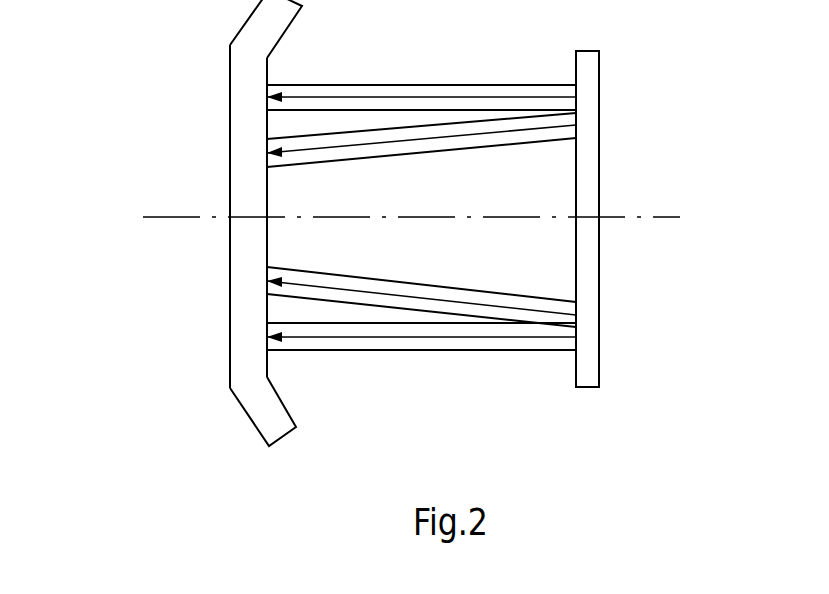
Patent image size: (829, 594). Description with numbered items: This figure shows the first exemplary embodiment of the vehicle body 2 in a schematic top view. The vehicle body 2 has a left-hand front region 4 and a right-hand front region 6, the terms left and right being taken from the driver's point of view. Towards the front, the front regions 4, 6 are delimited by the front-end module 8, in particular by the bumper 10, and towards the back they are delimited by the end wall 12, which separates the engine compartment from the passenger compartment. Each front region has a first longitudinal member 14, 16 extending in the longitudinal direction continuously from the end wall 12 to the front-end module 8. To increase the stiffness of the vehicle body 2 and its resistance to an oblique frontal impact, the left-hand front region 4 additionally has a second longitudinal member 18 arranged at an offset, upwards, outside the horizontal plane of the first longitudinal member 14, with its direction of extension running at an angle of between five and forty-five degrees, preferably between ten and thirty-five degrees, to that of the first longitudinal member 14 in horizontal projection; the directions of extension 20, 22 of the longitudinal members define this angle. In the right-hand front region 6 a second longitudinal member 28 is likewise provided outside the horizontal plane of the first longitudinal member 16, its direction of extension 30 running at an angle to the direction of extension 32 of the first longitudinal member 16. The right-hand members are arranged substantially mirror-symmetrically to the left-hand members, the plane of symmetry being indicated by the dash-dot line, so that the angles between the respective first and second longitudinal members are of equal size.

The vehicle body 2 is at (652, 75).
The left-hand front region 4 is at (182, 352).
The right-hand front region 6 is at (183, 78).
The front-end module 8 is at (217, 153).
The bumper 10 is at (245, 273).
The end wall 12 is at (588, 273).
The first longitudinal member 14 is at (487, 350).
The first longitudinal member 16 is at (490, 85).
The second longitudinal member 18 is at (527, 294).
The direction of extension 20 is at (410, 338).
The direction of extension 22 is at (445, 298).
The second longitudinal member 28 is at (515, 144).
The direction of extension 30 is at (435, 138).
The direction of extension 32 is at (413, 86).